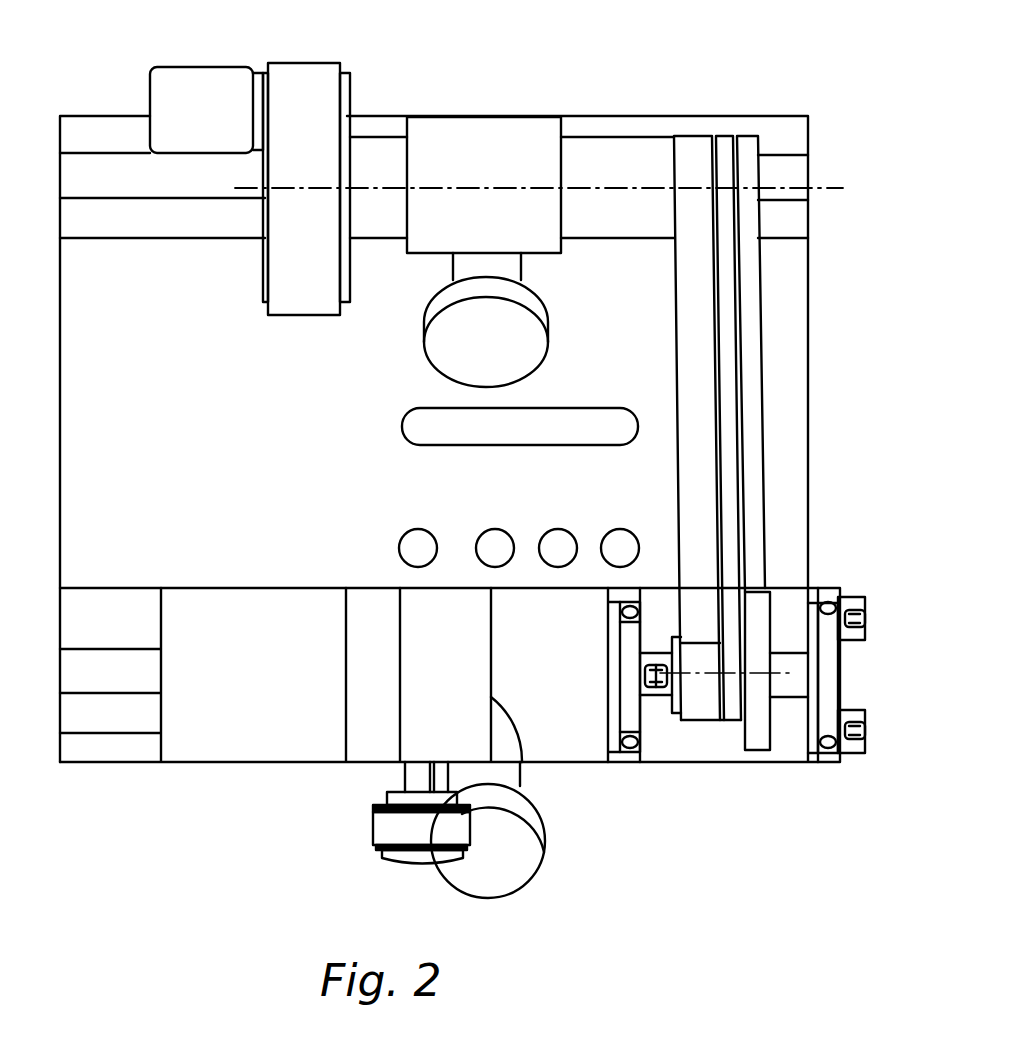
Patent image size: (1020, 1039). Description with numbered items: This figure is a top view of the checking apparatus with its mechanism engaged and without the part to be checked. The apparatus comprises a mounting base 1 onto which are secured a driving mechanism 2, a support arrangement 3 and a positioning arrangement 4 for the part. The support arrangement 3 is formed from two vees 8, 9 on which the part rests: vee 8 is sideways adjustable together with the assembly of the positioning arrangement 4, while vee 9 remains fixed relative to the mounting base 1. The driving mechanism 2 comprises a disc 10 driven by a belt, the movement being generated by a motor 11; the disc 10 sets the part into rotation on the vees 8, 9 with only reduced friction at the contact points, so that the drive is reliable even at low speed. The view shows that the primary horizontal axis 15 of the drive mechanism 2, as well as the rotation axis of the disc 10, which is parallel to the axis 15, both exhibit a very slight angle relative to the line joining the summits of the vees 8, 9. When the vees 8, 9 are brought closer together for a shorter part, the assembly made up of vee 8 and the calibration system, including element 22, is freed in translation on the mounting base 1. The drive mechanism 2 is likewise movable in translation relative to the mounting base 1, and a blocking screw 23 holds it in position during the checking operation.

The mounting base 1 is at (208, 452).
The driving mechanism 2 is at (784, 82).
The support arrangement 3 is at (710, 784).
The positioning arrangement 4 is at (326, 794).
The vee 8 is at (630, 692).
The vee 9 is at (832, 688).
The disc 10 is at (756, 625).
The motor 11 is at (212, 128).
The primary horizontal axis 15 is at (514, 188).
The calibration system element 22 is at (387, 828).
The blocking screw 23 is at (530, 268).